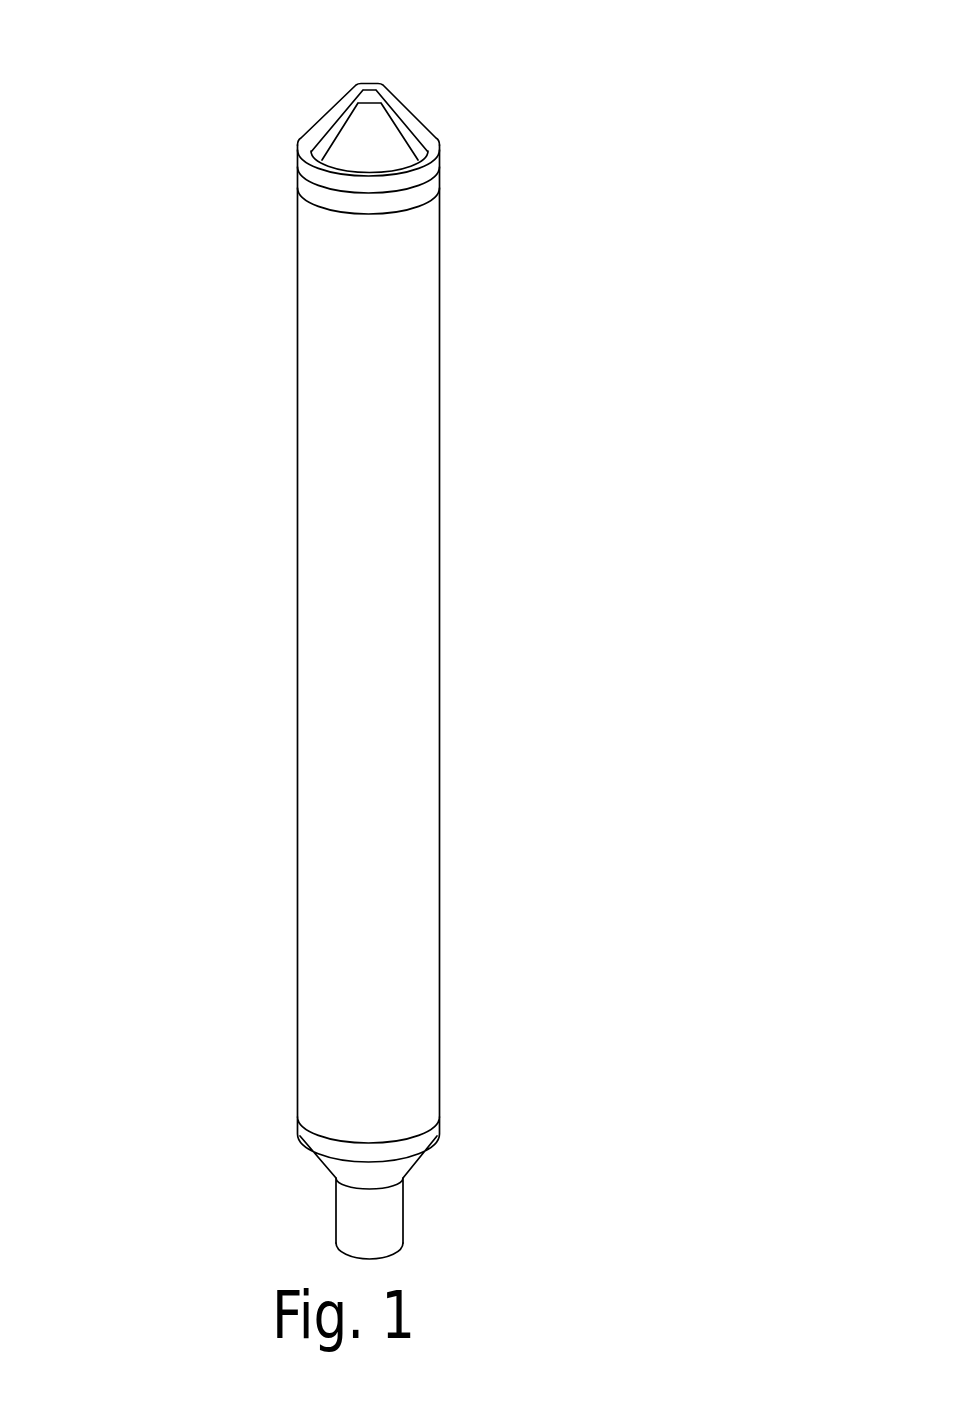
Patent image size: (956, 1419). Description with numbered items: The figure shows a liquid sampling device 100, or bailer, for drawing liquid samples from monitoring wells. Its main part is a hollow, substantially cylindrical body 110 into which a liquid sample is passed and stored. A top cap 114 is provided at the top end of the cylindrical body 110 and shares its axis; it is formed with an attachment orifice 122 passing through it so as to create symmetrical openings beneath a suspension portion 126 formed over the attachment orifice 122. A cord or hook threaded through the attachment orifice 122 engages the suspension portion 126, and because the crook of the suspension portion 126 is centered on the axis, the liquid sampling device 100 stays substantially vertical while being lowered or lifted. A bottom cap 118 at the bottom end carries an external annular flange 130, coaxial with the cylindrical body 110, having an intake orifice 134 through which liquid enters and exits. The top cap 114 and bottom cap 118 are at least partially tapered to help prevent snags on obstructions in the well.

The liquid sampling device 100 is at (232, 442).
The cylindrical body 110 is at (388, 490).
The top cap 114 is at (432, 178).
The bottom cap 118 is at (405, 1165).
The attachment orifice 122 is at (371, 135).
The suspension portion 126 is at (357, 98).
The external annular flange 130 is at (357, 1215).
The intake orifice 134 is at (378, 1258).